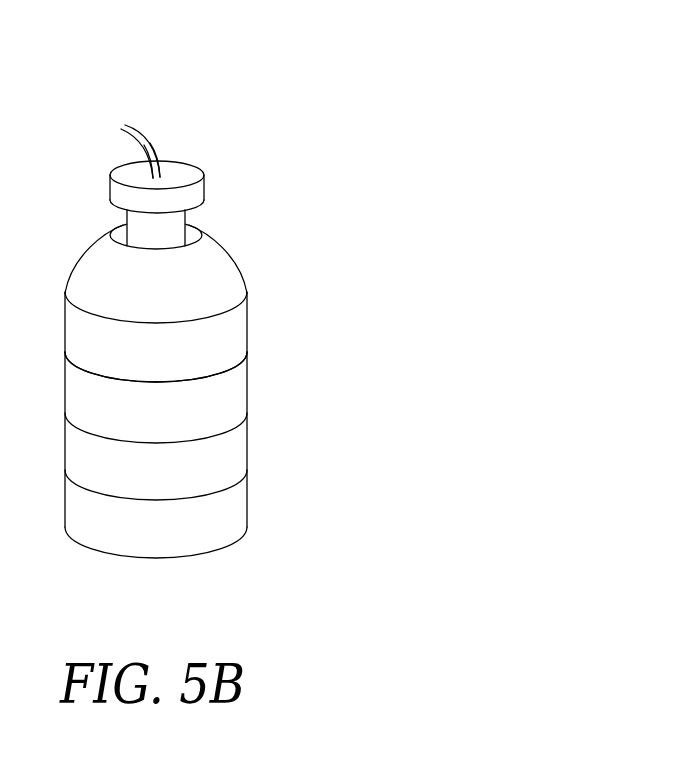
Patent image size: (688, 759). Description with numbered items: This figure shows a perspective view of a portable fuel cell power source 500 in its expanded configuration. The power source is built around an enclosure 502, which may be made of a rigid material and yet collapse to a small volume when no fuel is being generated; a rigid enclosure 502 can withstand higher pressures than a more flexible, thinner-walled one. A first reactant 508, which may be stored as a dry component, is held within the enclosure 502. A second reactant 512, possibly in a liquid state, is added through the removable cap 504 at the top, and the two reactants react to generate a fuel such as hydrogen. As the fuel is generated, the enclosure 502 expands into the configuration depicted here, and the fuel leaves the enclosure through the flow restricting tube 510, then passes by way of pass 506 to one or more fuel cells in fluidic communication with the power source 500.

The portable fuel cell power source 500 is at (476, 71).
The enclosure 502 is at (229, 262).
The removable cap 504 is at (204, 187).
The pass 506 is at (121, 128).
The first reactant 508 is at (237, 498).
The flow restricting tube 510 is at (150, 139).
The second reactant 512 is at (237, 387).